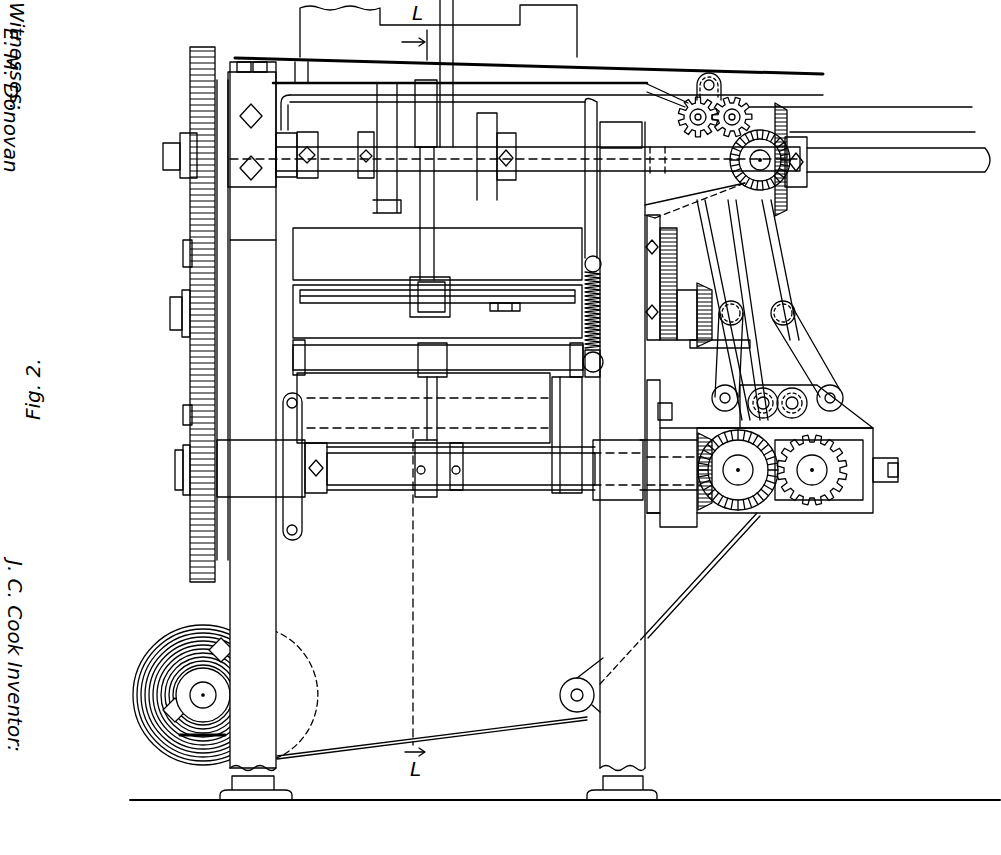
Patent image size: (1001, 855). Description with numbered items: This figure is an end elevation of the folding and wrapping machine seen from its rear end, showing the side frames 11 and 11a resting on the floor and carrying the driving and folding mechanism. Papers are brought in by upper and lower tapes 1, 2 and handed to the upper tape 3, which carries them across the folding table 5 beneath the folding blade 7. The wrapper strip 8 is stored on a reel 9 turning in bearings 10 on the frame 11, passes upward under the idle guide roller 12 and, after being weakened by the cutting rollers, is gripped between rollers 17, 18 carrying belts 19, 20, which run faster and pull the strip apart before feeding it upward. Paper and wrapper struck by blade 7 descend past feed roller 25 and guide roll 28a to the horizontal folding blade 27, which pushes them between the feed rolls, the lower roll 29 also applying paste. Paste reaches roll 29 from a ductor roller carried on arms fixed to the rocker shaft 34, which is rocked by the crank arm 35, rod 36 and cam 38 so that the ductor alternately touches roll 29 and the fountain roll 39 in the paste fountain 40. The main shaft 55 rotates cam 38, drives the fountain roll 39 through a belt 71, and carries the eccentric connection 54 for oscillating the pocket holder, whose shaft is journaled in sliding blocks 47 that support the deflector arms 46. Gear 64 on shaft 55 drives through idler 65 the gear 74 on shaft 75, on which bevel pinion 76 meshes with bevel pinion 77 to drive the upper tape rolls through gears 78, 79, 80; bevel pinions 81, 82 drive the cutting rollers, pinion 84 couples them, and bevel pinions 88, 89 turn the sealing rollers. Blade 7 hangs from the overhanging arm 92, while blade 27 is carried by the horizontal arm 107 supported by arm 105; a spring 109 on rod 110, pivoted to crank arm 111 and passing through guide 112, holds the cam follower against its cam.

The upper tape 1 is at (912, 100).
The lower tape 2 is at (818, 70).
The upper tape 3 is at (237, 63).
The folding table 5 is at (564, 100).
The folding blade 7 is at (567, 26).
The wrapper strip 8 is at (463, 736).
The reel 9 is at (203, 690).
The bearings 10 is at (183, 690).
The frame 11 is at (270, 648).
The side frame 11a is at (632, 735).
The idle guide roller 12 is at (568, 678).
The roller 17 is at (793, 400).
The roller 18 is at (748, 408).
The belt 19 is at (760, 276).
The tape 20 is at (708, 250).
The feed roller 25 is at (512, 117).
The folding blade 27 is at (521, 292).
The guide roll 28a is at (320, 243).
The lower roll 29 is at (437, 311).
The rocker shaft 34 is at (330, 357).
The crank arm 35 is at (420, 417).
The rod 36 is at (443, 490).
The cam 38 is at (433, 490).
The fountain roll 39 is at (507, 382).
The paste fountain 40 is at (503, 444).
The gears 46 is at (662, 211).
The blocks 47 is at (702, 292).
The eccentric connection 54 is at (293, 507).
The shaft 55 is at (178, 472).
The gear 64 is at (192, 420).
The idler 65 is at (190, 348).
The belt 71 is at (568, 485).
The gear 74 is at (192, 115).
The shaft 75 is at (178, 163).
The beveled pinion 76 is at (790, 207).
The beveled pinion 77 is at (767, 126).
The gear 78 is at (788, 107).
The gear 79 is at (733, 96).
The gear 80 is at (695, 96).
The beveled pinion 81 is at (704, 512).
The beveled pinion 82 is at (758, 502).
The pinion 84 is at (822, 492).
The beveled pinion 88 is at (780, 332).
The pinion 89 is at (770, 300).
The overhanging arm 92 is at (452, 56).
The arm 105 is at (432, 243).
The horizontal arm 107 is at (428, 300).
The spring 109 is at (600, 347).
The rod 110 is at (598, 268).
The crank arm 111 is at (592, 222).
The guide 112 is at (600, 373).